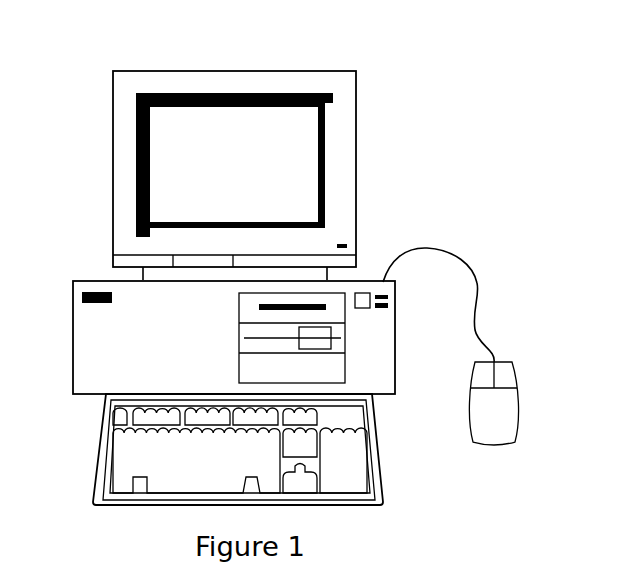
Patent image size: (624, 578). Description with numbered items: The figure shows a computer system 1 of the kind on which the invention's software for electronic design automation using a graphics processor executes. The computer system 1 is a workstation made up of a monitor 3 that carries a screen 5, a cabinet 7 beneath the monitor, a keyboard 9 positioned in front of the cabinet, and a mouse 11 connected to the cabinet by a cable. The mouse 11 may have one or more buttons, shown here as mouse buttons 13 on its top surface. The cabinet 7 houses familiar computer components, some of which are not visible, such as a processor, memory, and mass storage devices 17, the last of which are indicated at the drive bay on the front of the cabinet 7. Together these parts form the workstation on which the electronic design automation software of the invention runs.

The computer system 1 is at (370, 55).
The monitor 3 is at (357, 147).
The screen 5 is at (165, 155).
The cabinet 7 is at (97, 284).
The keyboard 9 is at (132, 506).
The mouse 11 is at (495, 435).
The mouse buttons 13 is at (505, 377).
The mass storage devices 17 is at (337, 297).